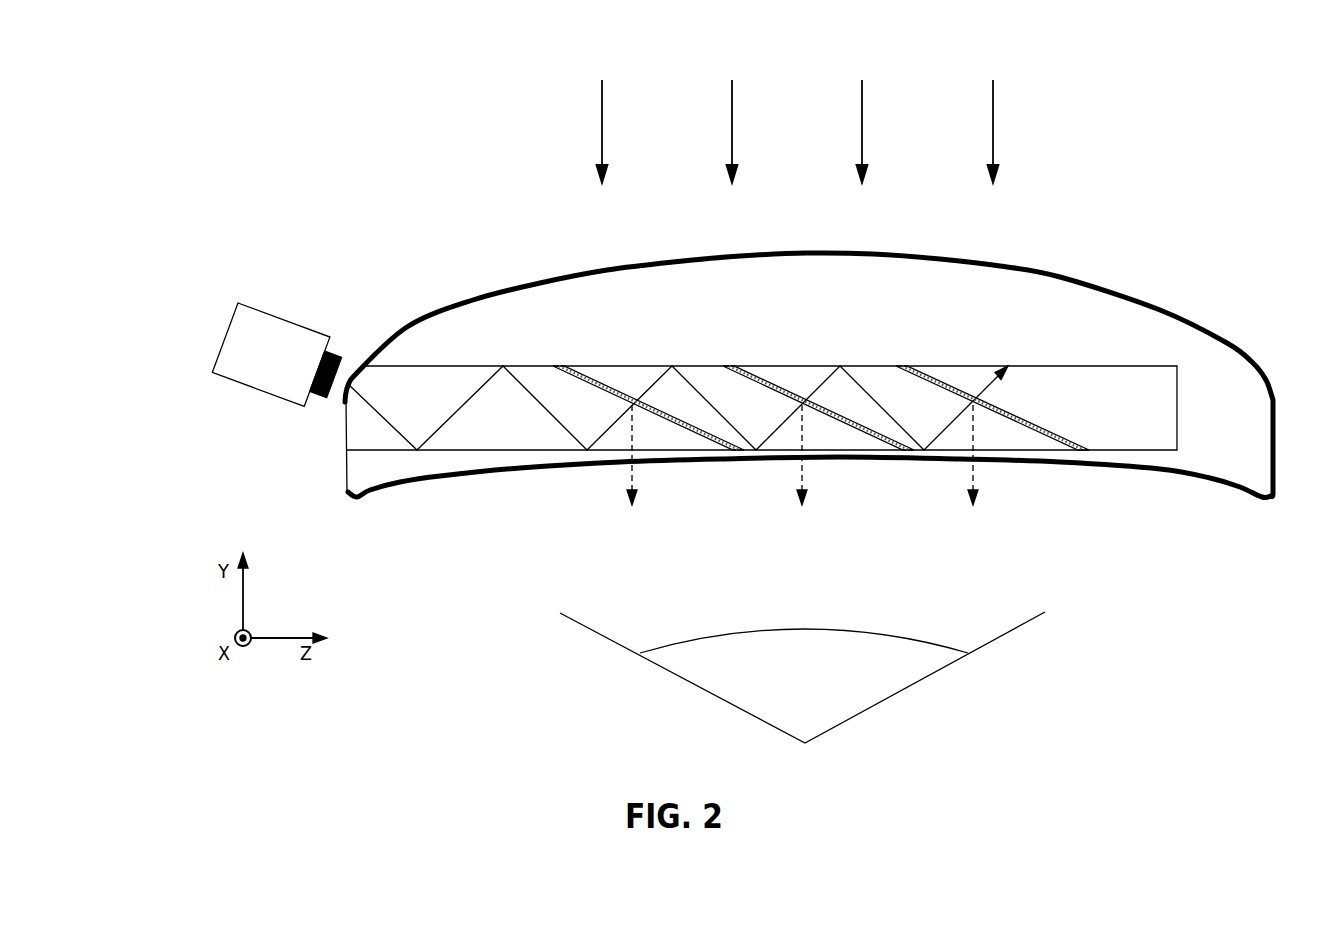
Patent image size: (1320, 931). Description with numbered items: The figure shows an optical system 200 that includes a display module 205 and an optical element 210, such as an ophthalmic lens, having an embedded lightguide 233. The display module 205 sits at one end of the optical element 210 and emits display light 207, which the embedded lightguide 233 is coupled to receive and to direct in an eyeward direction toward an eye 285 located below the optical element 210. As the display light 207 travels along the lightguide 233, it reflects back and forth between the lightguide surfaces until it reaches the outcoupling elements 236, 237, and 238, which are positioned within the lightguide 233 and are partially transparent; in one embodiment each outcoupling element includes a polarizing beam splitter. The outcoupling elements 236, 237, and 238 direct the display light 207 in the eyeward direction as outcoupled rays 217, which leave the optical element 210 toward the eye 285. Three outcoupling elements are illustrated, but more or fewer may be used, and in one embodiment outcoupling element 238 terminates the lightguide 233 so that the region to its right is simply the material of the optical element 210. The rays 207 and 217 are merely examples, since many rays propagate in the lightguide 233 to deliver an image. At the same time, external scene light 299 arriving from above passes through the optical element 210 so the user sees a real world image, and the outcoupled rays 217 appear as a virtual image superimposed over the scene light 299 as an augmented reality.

The optical system 200 is at (1214, 70).
The external scene light 299 is at (798, 117).
The optical element 210 is at (1002, 265).
The display module 205 is at (290, 323).
The embedded lightguide 233 is at (988, 356).
The display light 207 is at (443, 423).
The outcoupling element 236 is at (558, 366).
The outcoupling element 237 is at (729, 366).
The outcoupling element 238 is at (901, 366).
The outcoupled rays 217 is at (633, 472).
The eye 285 is at (820, 695).